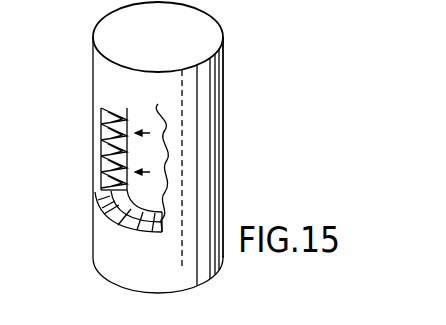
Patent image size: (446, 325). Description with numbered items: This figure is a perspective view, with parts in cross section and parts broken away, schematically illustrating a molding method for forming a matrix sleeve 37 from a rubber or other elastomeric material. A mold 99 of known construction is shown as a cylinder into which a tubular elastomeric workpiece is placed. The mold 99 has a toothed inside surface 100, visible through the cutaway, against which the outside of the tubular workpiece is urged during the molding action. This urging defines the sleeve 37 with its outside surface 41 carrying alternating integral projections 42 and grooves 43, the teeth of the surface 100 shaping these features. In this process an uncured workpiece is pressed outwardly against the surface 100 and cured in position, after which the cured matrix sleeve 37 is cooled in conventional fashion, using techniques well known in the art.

The mold 99 is at (223, 60).
The grooves 43 is at (128, 128).
The integral projections 42 is at (128, 126).
The outside surface 41 is at (122, 162).
The matrix sleeve 37 is at (104, 173).
The toothed inside surface 100 is at (103, 207).